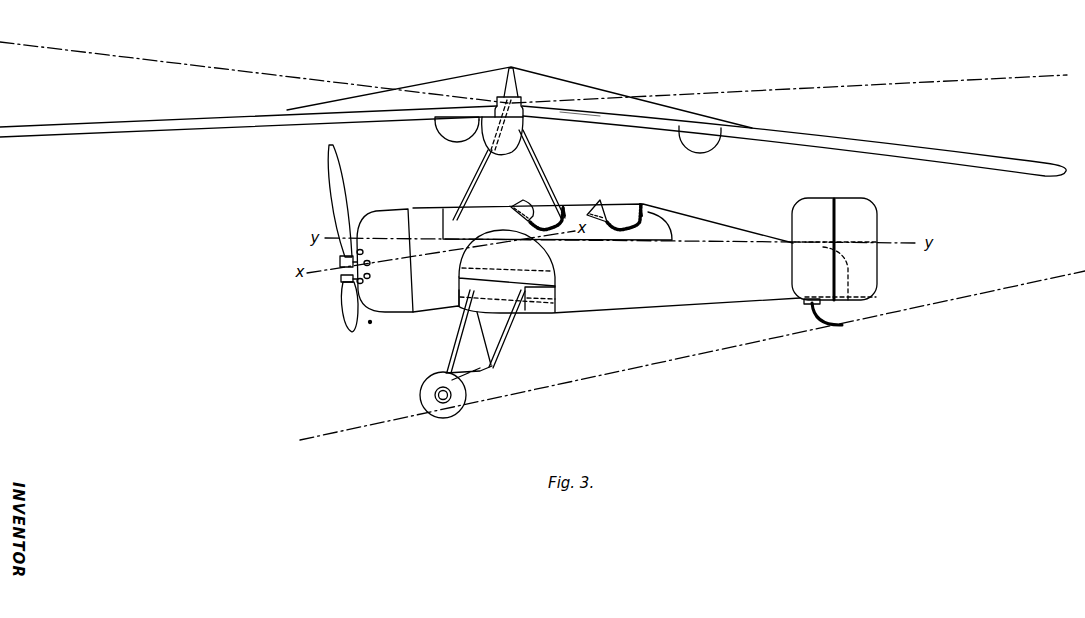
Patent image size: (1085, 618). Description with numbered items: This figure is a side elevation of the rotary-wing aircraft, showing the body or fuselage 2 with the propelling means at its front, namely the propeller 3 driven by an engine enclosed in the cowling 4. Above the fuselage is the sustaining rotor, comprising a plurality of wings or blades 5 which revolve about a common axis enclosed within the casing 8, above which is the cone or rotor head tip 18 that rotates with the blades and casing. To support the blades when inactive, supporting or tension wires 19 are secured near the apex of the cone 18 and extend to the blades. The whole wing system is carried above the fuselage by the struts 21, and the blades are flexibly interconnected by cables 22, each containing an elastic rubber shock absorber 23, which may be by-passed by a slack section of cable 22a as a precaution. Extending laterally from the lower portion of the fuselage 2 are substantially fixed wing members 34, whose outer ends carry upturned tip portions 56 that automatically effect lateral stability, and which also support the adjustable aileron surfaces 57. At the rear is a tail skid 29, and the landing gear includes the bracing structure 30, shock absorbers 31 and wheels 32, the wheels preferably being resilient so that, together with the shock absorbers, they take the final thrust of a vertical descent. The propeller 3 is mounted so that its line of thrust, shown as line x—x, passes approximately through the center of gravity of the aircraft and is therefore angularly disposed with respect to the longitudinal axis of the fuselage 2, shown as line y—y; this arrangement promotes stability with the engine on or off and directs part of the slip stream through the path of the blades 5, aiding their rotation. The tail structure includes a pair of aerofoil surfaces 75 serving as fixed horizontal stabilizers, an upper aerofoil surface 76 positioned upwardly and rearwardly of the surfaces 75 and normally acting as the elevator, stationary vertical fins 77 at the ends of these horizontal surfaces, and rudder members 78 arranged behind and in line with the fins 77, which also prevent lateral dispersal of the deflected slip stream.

The fuselage 2 is at (606, 256).
The propeller 3 is at (333, 197).
The cowling 4 is at (385, 266).
The wings or blades 5 is at (175, 119).
The casing 8 is at (519, 104).
The cone or rotor head tip 18 is at (514, 73).
The supporting or tension wires 19 is at (449, 80).
The struts 21 is at (471, 182).
The cables 22 is at (581, 125).
The slack section of cable 22a is at (463, 143).
The rubber shock absorber 23 is at (440, 119).
The tail skid 29 is at (818, 326).
The bracing structure 30 is at (500, 347).
The shock absorbers 31 is at (452, 350).
The wheels 32 is at (421, 391).
The fixed wing members 34 is at (458, 294).
The upturned tip portions 56 is at (507, 271).
The aileron surfaces 57 is at (556, 296).
The aerofoil surfaces 75 is at (807, 305).
The upper aerofoil surface 76 is at (860, 247).
The fins 77 is at (802, 288).
The rudder members 78 is at (868, 280).